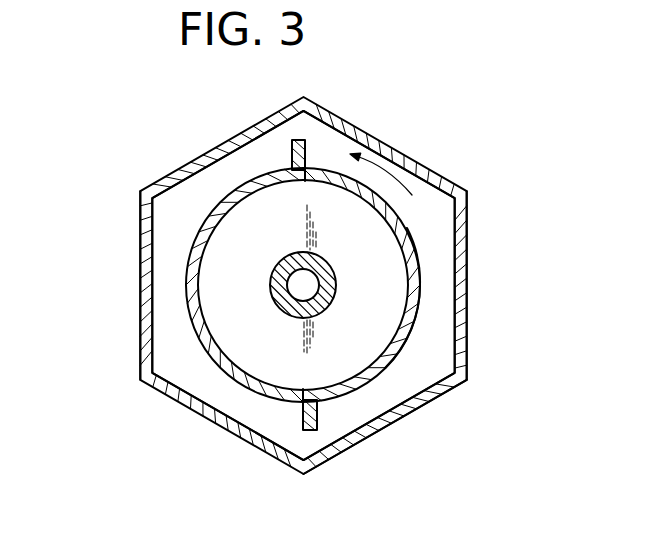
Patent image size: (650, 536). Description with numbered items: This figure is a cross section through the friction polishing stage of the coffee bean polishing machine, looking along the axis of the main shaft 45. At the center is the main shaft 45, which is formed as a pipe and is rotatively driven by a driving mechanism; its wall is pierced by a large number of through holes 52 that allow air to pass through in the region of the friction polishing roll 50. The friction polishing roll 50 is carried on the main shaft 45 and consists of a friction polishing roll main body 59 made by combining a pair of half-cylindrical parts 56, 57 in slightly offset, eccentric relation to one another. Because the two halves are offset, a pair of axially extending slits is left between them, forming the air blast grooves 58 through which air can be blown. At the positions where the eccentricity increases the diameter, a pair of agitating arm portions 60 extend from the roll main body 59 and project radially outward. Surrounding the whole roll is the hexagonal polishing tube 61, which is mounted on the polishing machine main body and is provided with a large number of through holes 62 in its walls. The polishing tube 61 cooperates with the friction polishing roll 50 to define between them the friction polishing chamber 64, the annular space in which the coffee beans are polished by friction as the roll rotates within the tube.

The main shaft 45 is at (270, 283).
The friction polishing roll 50 is at (204, 186).
The through holes 52 is at (327, 268).
The half-cylindrical part 56 is at (187, 275).
The half-cylindrical part 57 is at (415, 332).
The air blast grooves 58 is at (302, 173).
The friction polishing roll main body 59 is at (425, 270).
The agitating arm portions 60 is at (291, 150).
The hexagonal polishing tube 61 is at (465, 298).
The through holes 62 is at (140, 218).
The friction polishing chamber 64 is at (433, 224).